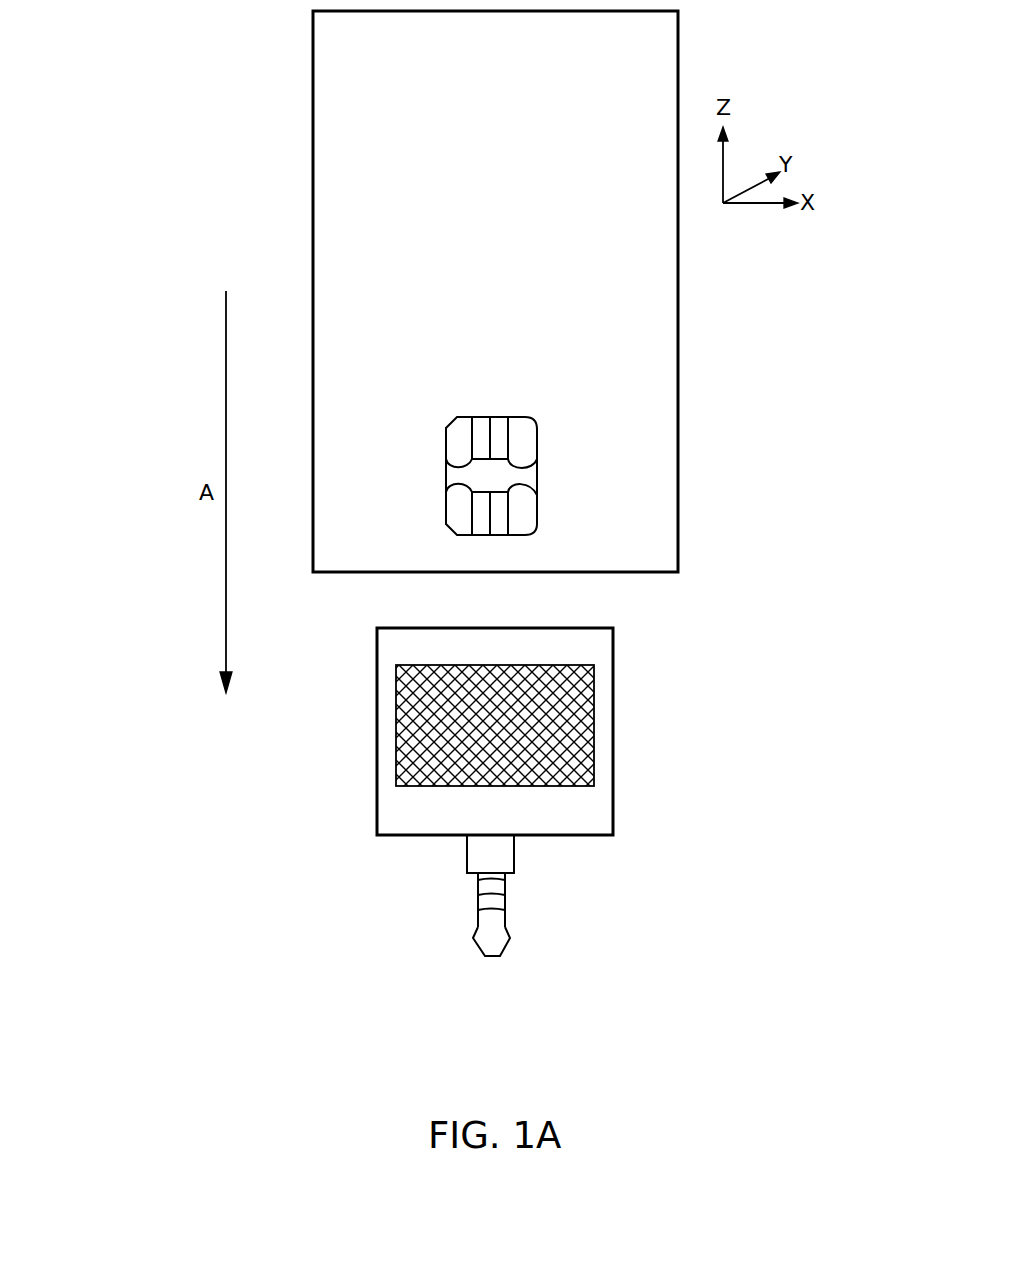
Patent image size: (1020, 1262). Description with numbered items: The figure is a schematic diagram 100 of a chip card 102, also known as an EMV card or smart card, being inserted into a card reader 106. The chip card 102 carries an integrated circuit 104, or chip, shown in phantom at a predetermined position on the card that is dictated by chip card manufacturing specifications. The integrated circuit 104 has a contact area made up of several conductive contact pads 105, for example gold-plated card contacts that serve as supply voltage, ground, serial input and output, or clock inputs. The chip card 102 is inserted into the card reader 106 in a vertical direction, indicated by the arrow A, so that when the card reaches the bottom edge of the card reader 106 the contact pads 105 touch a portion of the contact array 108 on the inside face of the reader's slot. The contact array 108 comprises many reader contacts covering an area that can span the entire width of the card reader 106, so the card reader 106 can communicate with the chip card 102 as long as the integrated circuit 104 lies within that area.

The schematic diagram 100 is at (131, 1088).
The chip card 102 is at (678, 313).
The integrated circuit 104 is at (533, 430).
The contact pads 105 is at (499, 510).
The card reader 106 is at (613, 708).
The contact array 108 is at (577, 765).